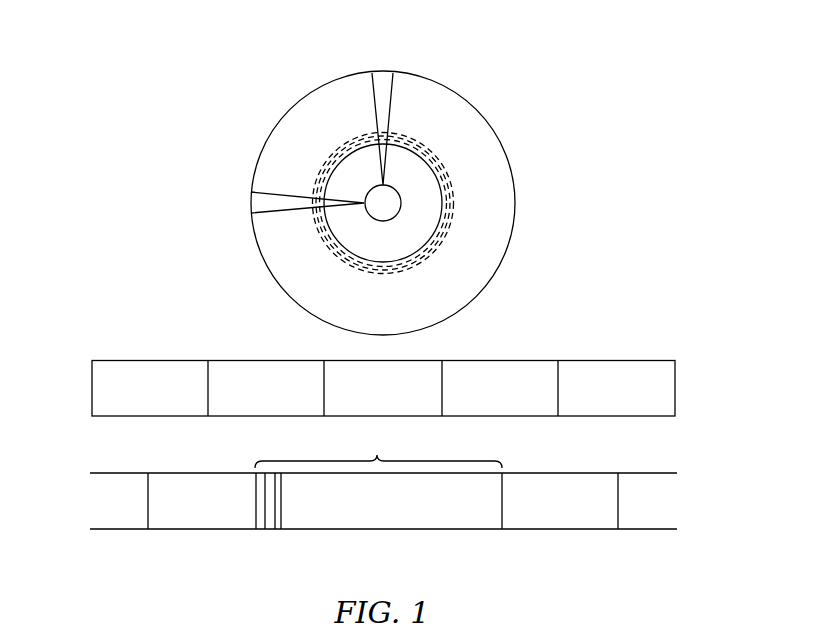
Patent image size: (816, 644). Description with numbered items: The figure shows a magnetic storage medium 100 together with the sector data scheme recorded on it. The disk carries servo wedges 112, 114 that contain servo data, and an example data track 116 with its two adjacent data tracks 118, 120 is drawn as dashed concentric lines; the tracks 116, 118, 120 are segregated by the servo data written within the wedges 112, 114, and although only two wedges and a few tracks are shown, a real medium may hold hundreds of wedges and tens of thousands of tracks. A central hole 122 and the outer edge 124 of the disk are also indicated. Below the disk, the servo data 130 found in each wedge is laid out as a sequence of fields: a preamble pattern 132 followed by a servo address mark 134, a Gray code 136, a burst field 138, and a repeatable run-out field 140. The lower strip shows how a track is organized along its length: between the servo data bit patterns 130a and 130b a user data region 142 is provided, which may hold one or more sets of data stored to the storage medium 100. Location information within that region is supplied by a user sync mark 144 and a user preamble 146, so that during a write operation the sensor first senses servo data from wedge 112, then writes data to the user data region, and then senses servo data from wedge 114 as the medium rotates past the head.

The magnetic storage medium 100 is at (278, 84).
The servo wedge 112 is at (251, 200).
The servo wedge 114 is at (385, 73).
The data track 116 is at (448, 214).
The adjacent data track 118 is at (440, 240).
The adjacent data track 120 is at (445, 184).
The spindle hole 122 is at (388, 221).
The outer edge of disk 124 is at (513, 233).
The servo data 130 is at (598, 342).
The servo data bit pattern 130a is at (180, 526).
The servo data bit pattern 130b is at (538, 526).
The preamble pattern 132 is at (133, 412).
The servo address mark 134 is at (250, 412).
The Gray code 136 is at (367, 412).
The burst field 138 is at (483, 412).
The repeatable run-out (RRO) field 140 is at (633, 412).
The user data region 142 is at (462, 442).
The user sync mark 144 is at (442, 571).
The user preamble 146 is at (118, 571).